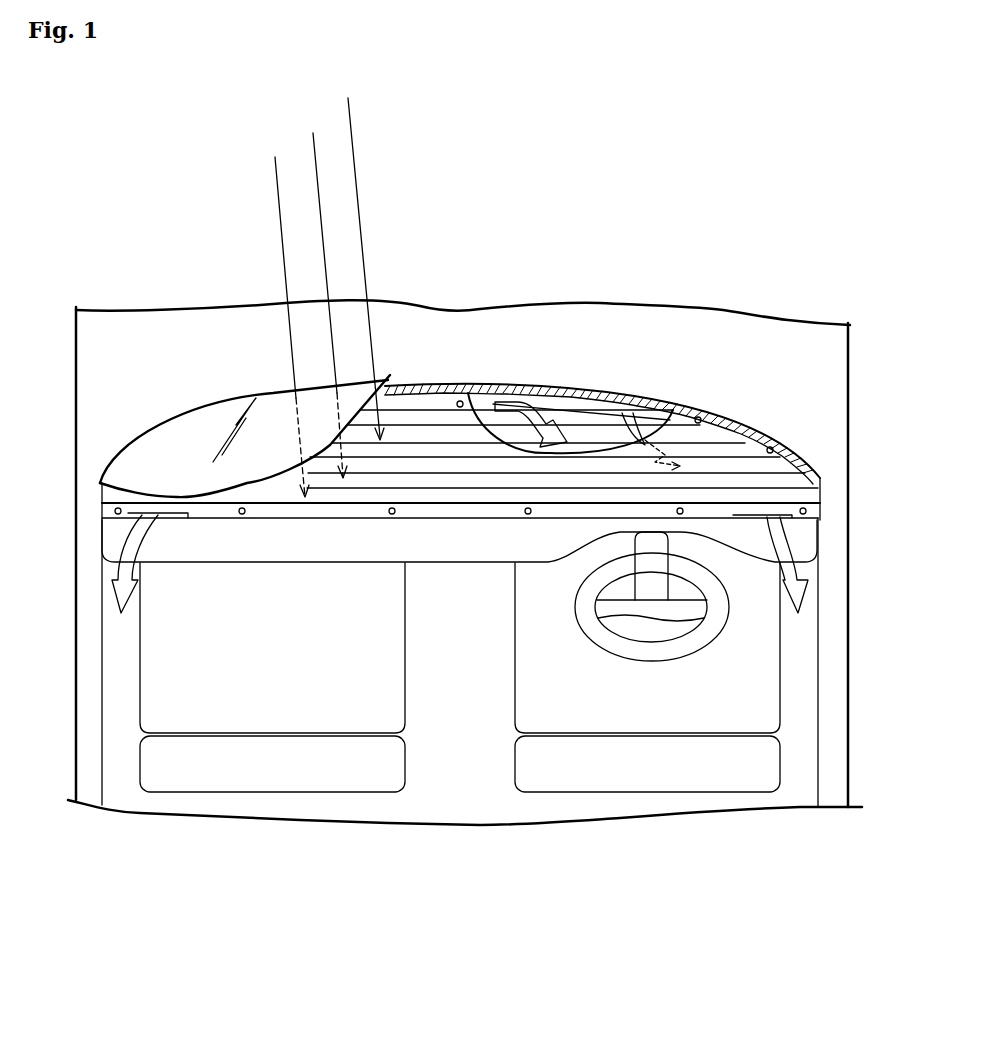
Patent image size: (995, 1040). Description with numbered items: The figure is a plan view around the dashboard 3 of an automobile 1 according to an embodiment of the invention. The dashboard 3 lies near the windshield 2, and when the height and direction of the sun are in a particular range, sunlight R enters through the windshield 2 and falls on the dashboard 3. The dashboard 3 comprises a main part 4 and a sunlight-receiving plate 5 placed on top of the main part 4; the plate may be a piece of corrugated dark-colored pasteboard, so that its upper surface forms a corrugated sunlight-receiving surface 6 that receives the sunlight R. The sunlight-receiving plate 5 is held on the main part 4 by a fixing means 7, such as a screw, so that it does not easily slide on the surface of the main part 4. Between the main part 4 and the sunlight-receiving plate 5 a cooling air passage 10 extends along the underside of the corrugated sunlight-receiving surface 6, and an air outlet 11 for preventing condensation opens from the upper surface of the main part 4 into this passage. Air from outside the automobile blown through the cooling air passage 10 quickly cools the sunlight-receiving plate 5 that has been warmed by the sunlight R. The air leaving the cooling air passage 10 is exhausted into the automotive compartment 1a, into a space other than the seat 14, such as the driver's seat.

The automobile 1 is at (834, 282).
The automotive compartment 1a is at (457, 658).
The windshield 2 is at (182, 427).
The dashboard 3 is at (462, 247).
The main part 4 is at (450, 538).
The sunlight-receiving plate 5 is at (422, 420).
The sunlight-receiving surface 6 is at (722, 436).
The fixing means 7 is at (806, 512).
The cooling air passage 10 is at (582, 428).
The air outlet 11 is at (532, 410).
The seat 14 is at (397, 713).
The sunlight R is at (348, 118).